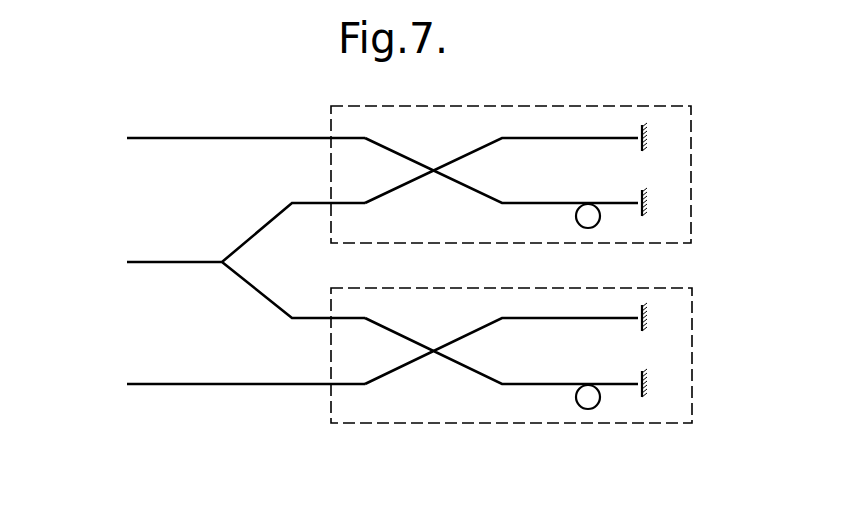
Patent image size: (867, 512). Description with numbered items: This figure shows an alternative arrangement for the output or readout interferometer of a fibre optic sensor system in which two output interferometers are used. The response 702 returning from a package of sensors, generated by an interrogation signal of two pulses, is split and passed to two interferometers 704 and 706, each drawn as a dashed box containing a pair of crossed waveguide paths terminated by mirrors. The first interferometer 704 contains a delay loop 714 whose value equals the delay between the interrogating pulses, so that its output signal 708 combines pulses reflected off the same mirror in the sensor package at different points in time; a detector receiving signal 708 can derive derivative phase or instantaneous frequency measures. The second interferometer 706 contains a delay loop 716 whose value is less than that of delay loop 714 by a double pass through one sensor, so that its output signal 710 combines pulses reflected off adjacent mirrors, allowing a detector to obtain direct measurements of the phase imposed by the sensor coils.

The response 702 is at (125, 262).
The first interferometer 704 is at (536, 173).
The second interferometer 706 is at (538, 361).
The signal 708 is at (125, 139).
The signal 710 is at (125, 384).
The delay loop 714 is at (589, 229).
The delay loop 716 is at (588, 410).